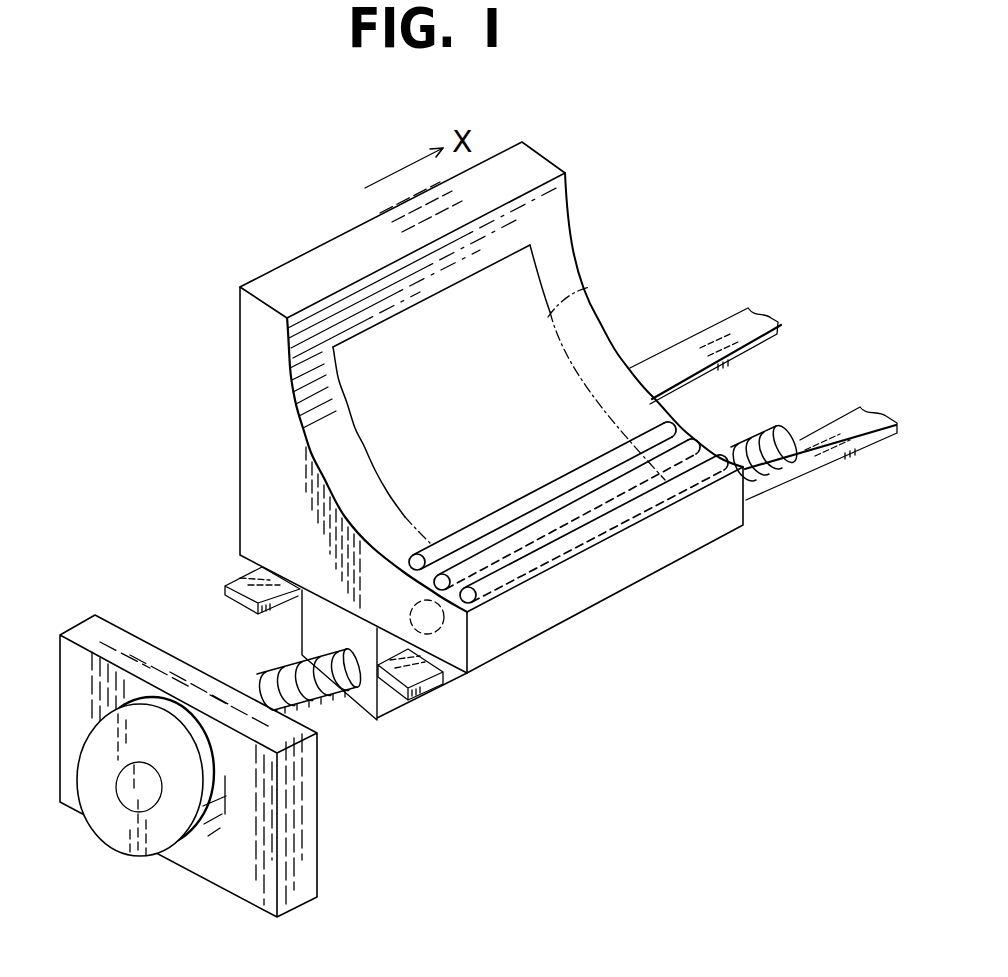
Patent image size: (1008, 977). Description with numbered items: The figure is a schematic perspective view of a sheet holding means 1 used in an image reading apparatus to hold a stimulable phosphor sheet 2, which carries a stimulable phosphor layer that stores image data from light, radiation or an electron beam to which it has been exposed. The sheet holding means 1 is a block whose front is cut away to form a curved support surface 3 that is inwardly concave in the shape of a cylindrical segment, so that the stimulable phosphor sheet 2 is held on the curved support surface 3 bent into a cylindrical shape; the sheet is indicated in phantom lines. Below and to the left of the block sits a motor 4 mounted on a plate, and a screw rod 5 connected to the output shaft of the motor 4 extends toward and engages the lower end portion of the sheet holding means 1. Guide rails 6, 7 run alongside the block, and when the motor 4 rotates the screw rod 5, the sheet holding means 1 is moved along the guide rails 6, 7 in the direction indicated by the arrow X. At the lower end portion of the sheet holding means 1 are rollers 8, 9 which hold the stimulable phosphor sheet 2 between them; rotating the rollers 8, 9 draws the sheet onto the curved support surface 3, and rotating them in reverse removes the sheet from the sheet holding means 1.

The sheet holding means 1 is at (246, 275).
The stimulable phosphor sheet 2 is at (590, 287).
The curved support surface 3 is at (300, 412).
The motor 4 is at (141, 850).
The screw rod 5 is at (278, 678).
The guide rail 6 is at (398, 678).
The guide rail 7 is at (240, 582).
The roller 8 is at (502, 517).
The roller 9 is at (440, 630).